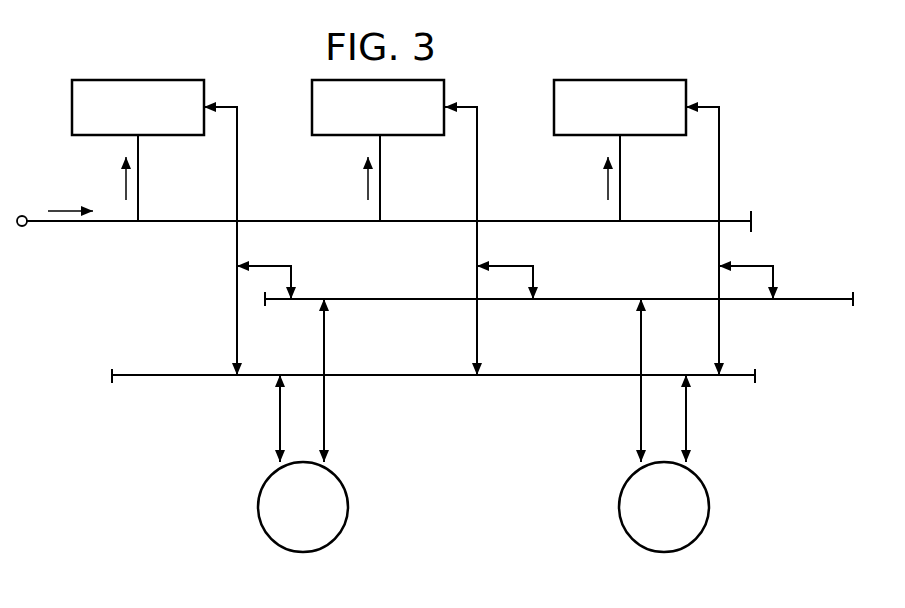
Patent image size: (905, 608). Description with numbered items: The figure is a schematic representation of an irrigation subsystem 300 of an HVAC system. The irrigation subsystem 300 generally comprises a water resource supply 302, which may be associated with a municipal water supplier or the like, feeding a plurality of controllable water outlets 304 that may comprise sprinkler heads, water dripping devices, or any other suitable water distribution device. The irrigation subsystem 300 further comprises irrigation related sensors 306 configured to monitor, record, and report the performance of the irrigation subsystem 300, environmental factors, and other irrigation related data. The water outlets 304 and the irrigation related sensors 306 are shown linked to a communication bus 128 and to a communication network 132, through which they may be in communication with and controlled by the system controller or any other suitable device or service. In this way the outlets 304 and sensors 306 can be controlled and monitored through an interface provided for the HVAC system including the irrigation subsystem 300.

The irrigation subsystem 300 is at (236, 62).
The water resource supply 302 is at (95, 226).
The controllable water outlets 304 is at (120, 120).
The irrigation related sensors 306 is at (285, 521).
The communication bus 128 is at (543, 378).
The communication network 132 is at (817, 303).